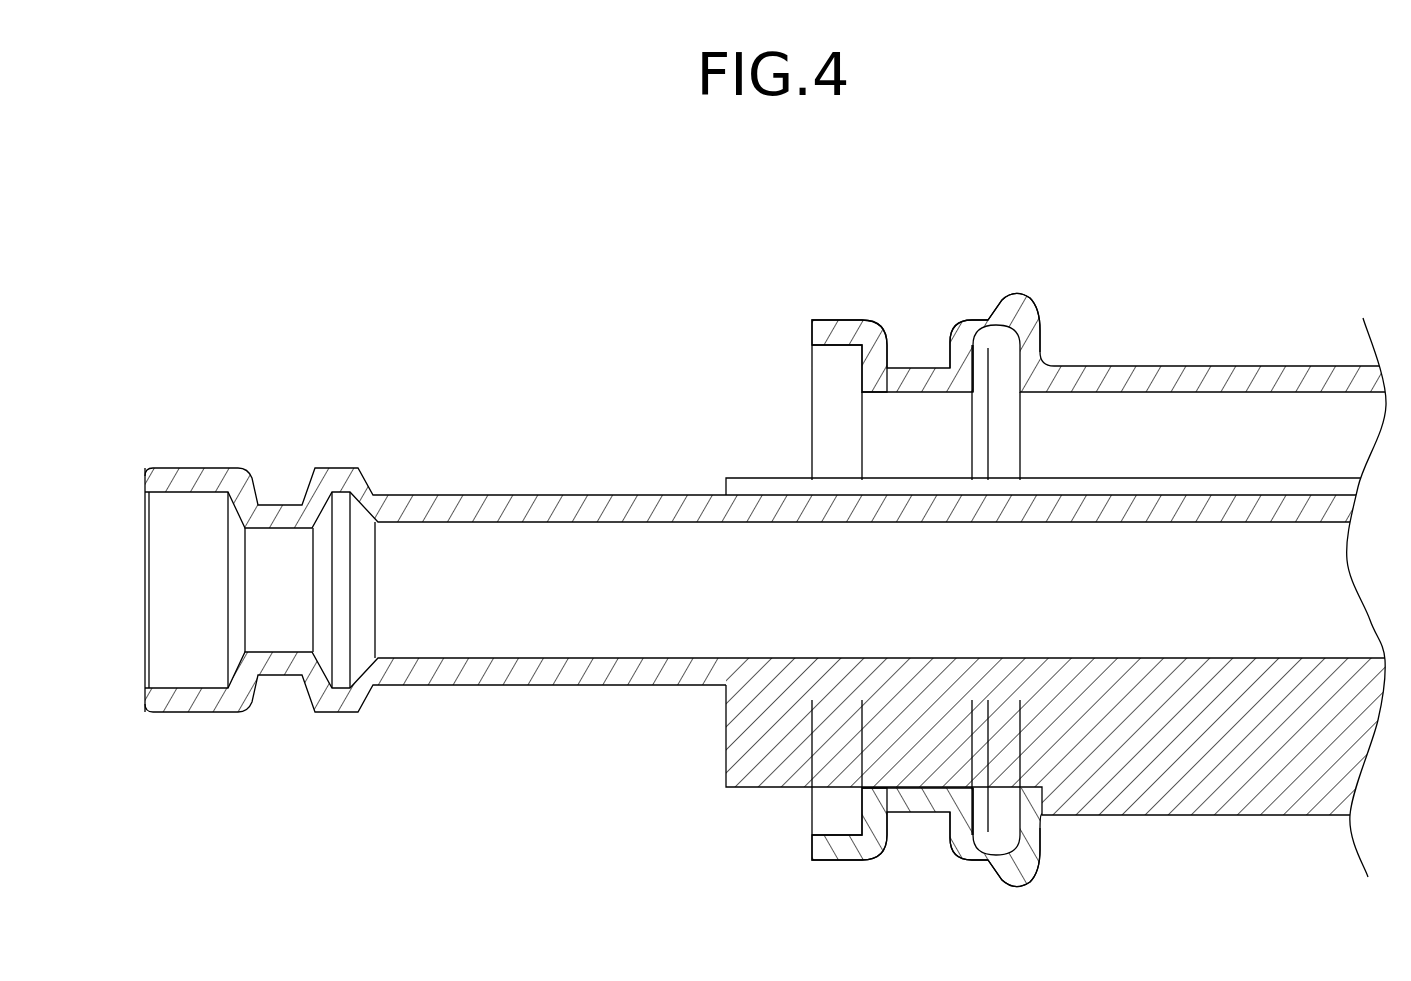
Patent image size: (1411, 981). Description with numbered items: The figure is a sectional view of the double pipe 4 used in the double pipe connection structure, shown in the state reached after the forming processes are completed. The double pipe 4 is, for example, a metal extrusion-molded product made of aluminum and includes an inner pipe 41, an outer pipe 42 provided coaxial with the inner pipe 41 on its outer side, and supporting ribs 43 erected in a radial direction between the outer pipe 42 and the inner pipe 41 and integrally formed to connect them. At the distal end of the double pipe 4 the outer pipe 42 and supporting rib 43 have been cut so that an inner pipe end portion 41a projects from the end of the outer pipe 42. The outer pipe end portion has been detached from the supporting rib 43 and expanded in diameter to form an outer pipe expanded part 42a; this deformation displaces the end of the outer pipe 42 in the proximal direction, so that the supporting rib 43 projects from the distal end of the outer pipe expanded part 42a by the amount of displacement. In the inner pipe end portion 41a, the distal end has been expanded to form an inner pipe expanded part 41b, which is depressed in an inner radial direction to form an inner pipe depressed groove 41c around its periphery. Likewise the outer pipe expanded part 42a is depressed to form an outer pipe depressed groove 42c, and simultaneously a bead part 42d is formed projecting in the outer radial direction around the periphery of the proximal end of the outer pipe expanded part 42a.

The double pipe 4 is at (1216, 258).
The inner pipe 41 is at (663, 493).
The inner pipe end portion 41a is at (561, 493).
The inner pipe expanded part 41b is at (183, 468).
The inner pipe depressed groove 41c is at (298, 500).
The outer pipe 42 is at (1245, 366).
The outer pipe expanded part 42a is at (832, 320).
The outer pipe depressed groove 42c is at (942, 356).
The bead part 42d is at (1037, 283).
The supporting rib 43 is at (746, 790).